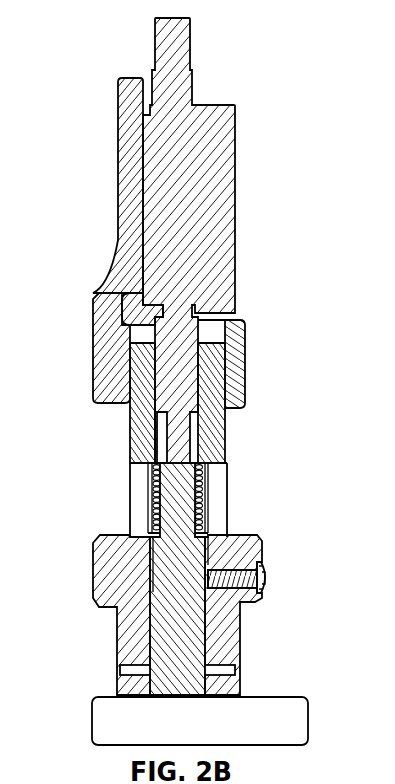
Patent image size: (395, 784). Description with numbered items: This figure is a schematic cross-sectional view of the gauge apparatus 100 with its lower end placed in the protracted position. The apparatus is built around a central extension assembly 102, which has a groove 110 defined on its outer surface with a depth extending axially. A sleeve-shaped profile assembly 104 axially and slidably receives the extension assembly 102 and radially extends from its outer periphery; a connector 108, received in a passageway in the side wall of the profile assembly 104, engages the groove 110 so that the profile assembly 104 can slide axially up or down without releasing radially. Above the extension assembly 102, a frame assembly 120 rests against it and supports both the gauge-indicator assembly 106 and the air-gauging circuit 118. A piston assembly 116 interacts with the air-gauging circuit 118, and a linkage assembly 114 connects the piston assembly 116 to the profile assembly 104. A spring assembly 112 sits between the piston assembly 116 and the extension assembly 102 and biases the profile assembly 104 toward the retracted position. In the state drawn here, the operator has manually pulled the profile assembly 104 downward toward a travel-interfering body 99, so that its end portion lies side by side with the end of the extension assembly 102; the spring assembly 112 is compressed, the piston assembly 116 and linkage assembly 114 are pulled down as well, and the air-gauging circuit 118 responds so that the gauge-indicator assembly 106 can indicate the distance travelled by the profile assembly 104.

The gauge apparatus 100 is at (112, 60).
The gauge-indicator assembly 106 is at (214, 135).
The frame assembly 120 is at (132, 170).
The air-gauging circuit 118 is at (136, 308).
The piston assembly 116 is at (143, 363).
The linkage assembly 114 is at (138, 477).
The spring assembly 112 is at (156, 505).
The extension assembly 102 is at (168, 637).
The profile assembly 104 is at (118, 681).
The groove 110 is at (208, 588).
The connector 108 is at (263, 593).
The travel-interfering body 99 is at (287, 706).